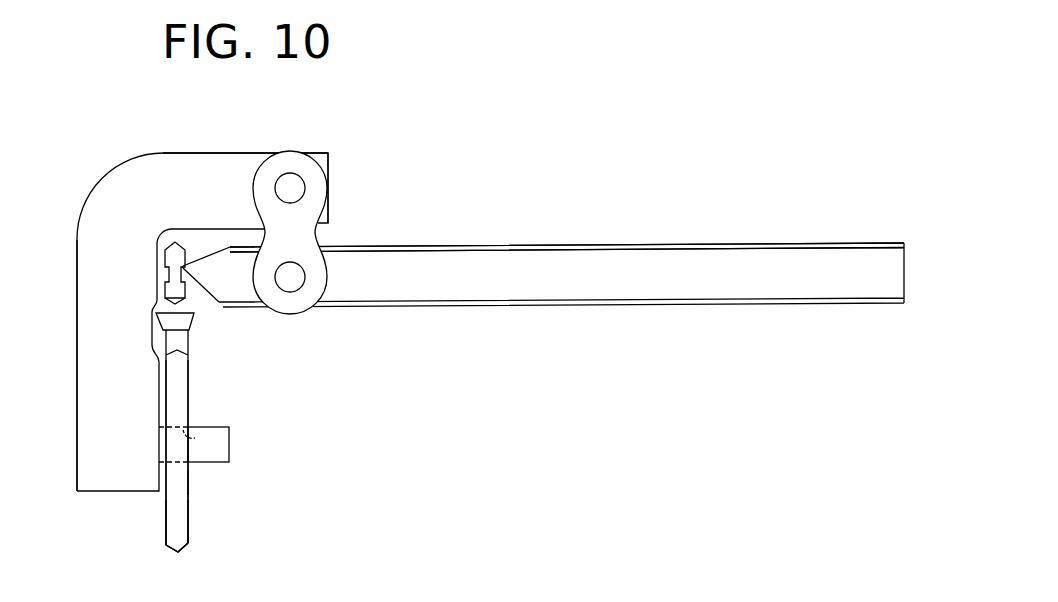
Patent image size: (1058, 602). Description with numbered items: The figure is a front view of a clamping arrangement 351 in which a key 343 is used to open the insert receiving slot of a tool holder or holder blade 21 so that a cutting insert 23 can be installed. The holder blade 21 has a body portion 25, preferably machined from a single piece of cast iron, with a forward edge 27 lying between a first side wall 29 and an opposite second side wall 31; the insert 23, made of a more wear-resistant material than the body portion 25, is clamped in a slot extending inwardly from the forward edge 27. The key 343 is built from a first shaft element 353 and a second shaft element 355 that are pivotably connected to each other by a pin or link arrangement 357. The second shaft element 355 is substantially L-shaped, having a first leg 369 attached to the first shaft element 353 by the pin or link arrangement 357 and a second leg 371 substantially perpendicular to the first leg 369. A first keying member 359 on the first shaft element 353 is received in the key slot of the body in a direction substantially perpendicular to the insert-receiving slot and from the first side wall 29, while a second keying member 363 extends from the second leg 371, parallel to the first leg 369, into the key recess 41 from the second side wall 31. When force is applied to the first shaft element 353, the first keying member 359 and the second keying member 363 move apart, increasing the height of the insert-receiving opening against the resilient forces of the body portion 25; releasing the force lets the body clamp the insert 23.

The holder blade 21 is at (156, 546).
The cutting insert 23 is at (167, 316).
The body portion 25 is at (192, 522).
The forward edge 27 is at (188, 542).
The first side wall 29 is at (188, 484).
The second side wall 31 is at (166, 511).
The key recess 41 is at (196, 438).
The key 343 is at (674, 230).
The clamping arrangement 351 is at (375, 123).
The first shaft element 353 is at (790, 234).
The second shaft element 355 is at (101, 156).
The pin or link arrangement 357 is at (300, 241).
The first keying member 359 is at (185, 272).
The second keying member 363 is at (229, 440).
The first leg 369 is at (205, 151).
The second leg 371 is at (77, 343).